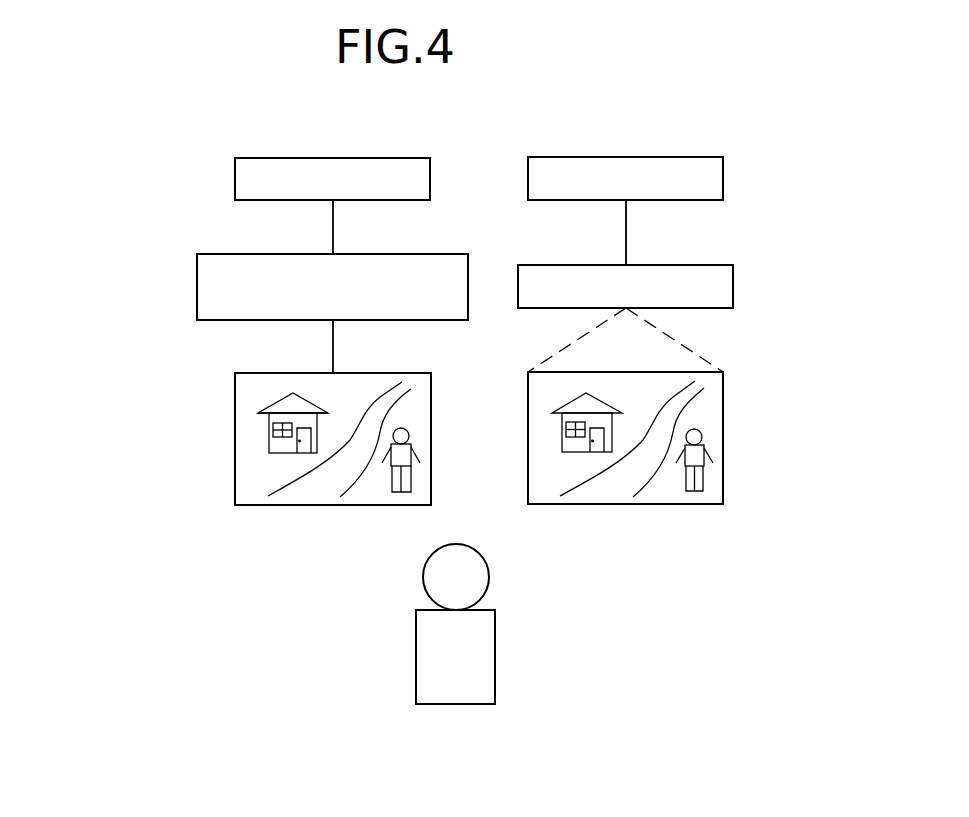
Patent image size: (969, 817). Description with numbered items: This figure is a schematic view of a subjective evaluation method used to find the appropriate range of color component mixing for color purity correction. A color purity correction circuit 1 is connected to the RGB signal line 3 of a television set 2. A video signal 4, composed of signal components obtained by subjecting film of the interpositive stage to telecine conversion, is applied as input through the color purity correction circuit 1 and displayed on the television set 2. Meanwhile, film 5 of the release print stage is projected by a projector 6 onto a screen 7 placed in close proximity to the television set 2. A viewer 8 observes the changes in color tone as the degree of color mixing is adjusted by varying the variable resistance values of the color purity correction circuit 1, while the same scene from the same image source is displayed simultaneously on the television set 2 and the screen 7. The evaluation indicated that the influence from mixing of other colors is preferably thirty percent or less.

The color purity correction circuit 1 is at (448, 259).
The television set 2 is at (235, 389).
The RGB signal line 3 is at (333, 350).
The video signal 4 is at (418, 161).
The film 5 is at (700, 165).
The projector 6 is at (722, 272).
The screen 7 is at (723, 432).
The viewer 8 is at (495, 630).